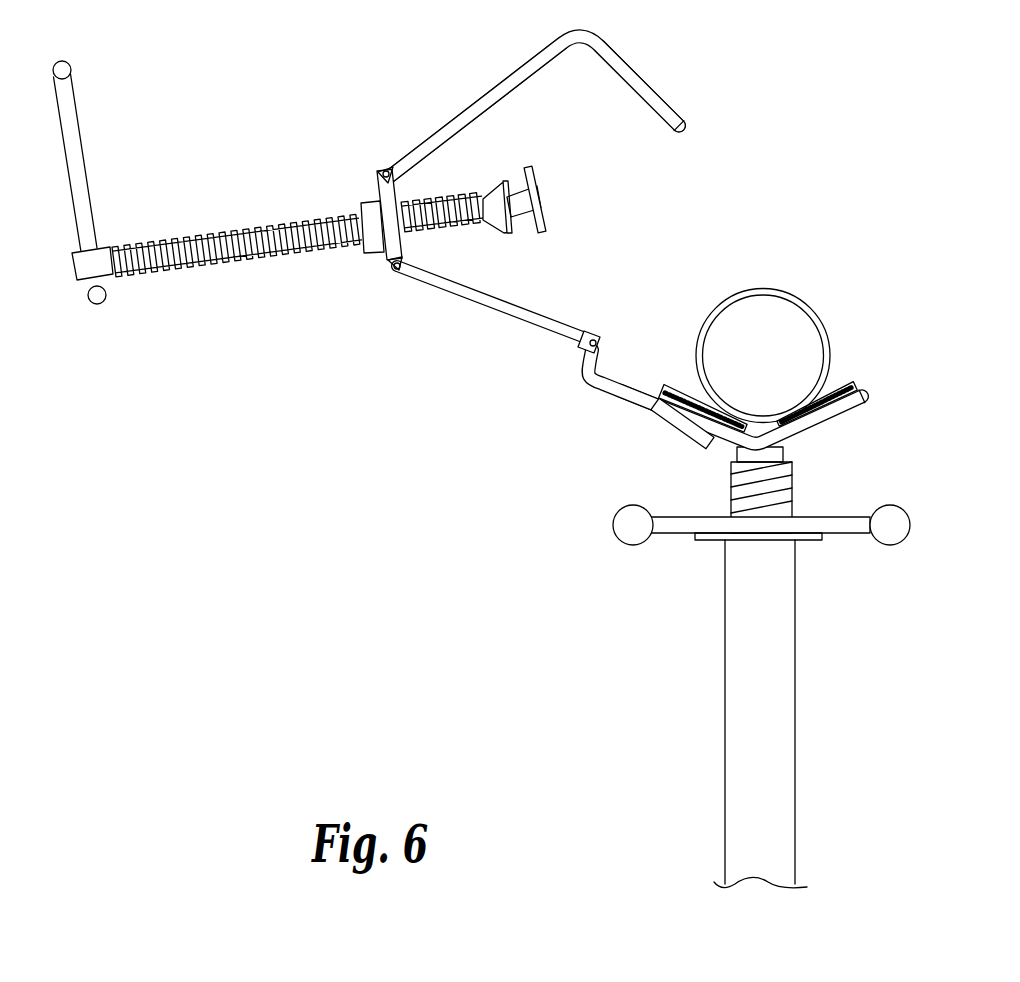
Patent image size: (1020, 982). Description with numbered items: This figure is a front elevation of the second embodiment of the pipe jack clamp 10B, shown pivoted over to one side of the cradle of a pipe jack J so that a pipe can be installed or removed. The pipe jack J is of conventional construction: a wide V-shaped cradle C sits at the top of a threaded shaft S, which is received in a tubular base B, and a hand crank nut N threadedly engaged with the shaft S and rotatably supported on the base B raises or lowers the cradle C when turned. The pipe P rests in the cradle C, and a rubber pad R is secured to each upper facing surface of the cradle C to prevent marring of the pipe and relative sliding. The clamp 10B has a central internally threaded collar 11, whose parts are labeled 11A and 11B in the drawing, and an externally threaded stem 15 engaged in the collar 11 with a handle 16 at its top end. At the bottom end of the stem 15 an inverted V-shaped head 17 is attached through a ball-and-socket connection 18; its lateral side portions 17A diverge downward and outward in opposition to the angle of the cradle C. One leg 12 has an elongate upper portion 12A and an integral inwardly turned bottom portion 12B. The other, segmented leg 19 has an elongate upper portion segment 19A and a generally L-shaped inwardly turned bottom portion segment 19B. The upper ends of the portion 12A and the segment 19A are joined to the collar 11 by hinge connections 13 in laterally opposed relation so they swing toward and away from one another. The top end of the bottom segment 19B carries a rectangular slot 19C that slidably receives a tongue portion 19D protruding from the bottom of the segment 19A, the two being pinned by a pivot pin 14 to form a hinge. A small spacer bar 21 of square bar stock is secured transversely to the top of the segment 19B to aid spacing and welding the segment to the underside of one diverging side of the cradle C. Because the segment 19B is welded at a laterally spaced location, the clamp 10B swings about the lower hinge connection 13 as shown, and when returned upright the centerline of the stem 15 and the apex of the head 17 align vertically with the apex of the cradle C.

The pipe jack clamp 10B is at (459, 248).
The collar member 11 is at (363, 242).
The nut cross bar 11A is at (403, 249).
The pivot lugs 11B is at (375, 177).
The leg member 12 is at (546, 104).
The elongate upper portion 12A is at (428, 138).
The inwardly turned bottom portion 12B is at (641, 78).
The hinge connection 13 is at (383, 172).
The pivot pin 14 is at (598, 337).
The externally threaded stem 15 is at (226, 232).
The handle 16 is at (82, 165).
The inverted V-shaped head 17 is at (527, 170).
The lateral side portions 17A is at (539, 203).
The ball-and-socket connection 18 is at (486, 196).
The segmented second leg 19 is at (622, 364).
The elongate upper portion segment 19A is at (437, 288).
The inwardly turned bottom portion segment 19B is at (624, 400).
The rectangular slot 19C is at (583, 358).
The tongue portion 19D is at (517, 334).
The spacer bar 21 is at (653, 410).
The rubber pad R is at (683, 388).
The pipe P is at (812, 328).
The V-shaped cradle C is at (741, 417).
The threaded shaft S is at (730, 486).
The hand crank nut N is at (804, 527).
The pipe jack J is at (761, 667).
The tubular base B is at (797, 656).